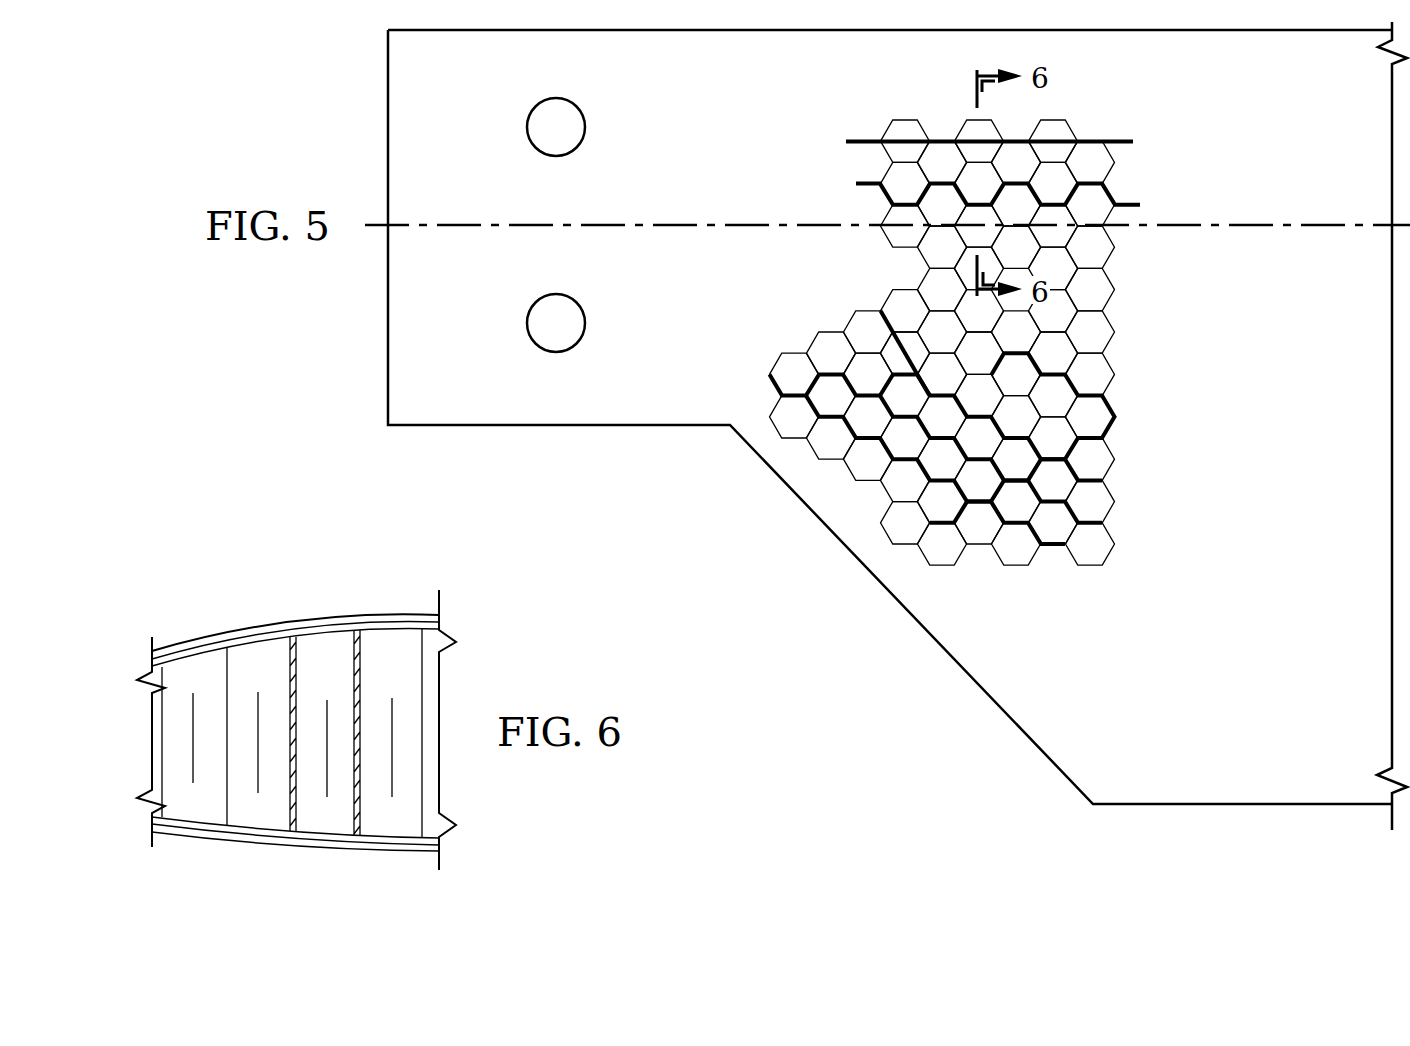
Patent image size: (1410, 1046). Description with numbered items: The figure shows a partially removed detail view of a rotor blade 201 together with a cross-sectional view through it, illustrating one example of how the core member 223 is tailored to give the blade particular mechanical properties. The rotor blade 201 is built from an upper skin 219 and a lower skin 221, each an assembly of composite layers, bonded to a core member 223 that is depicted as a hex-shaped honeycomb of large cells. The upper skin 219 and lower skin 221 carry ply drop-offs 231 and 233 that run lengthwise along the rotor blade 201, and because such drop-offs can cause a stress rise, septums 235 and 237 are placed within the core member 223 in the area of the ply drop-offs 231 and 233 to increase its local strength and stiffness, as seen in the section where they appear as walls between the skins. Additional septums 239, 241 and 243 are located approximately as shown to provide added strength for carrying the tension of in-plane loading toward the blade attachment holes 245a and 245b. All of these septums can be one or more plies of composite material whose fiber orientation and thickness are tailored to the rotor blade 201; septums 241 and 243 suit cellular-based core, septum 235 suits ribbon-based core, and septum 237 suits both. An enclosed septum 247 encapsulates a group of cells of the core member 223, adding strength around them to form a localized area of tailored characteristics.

In FIG. 5, the rotor blade 201 is at (348, 70).
In FIG. 6, the upper skin 219 is at (303, 598).
In FIG. 6, the lower skin 221 is at (415, 860).
In FIG. 5, the core member 223 is at (903, 118).
In FIG. 6, the ply drop-off 231 is at (237, 641).
In FIG. 6, the ply drop-off 233 is at (322, 626).
In FIG. 5, the septum 235 is at (860, 140).
In FIG. 6, the septum 235 is at (297, 836).
In FIG. 5, the septum 237 is at (856, 184).
In FIG. 6, the septum 237 is at (363, 838).
In FIG. 5, the septum 239 is at (878, 317).
In FIG. 5, the septum 241 is at (790, 363).
In FIG. 5, the septum 243 is at (1057, 548).
In FIG. 5, the blade attachment hole 245a is at (536, 106).
In FIG. 5, the blade attachment hole 245b is at (536, 302).
In FIG. 5, the enclosed septum 247 is at (1116, 424).